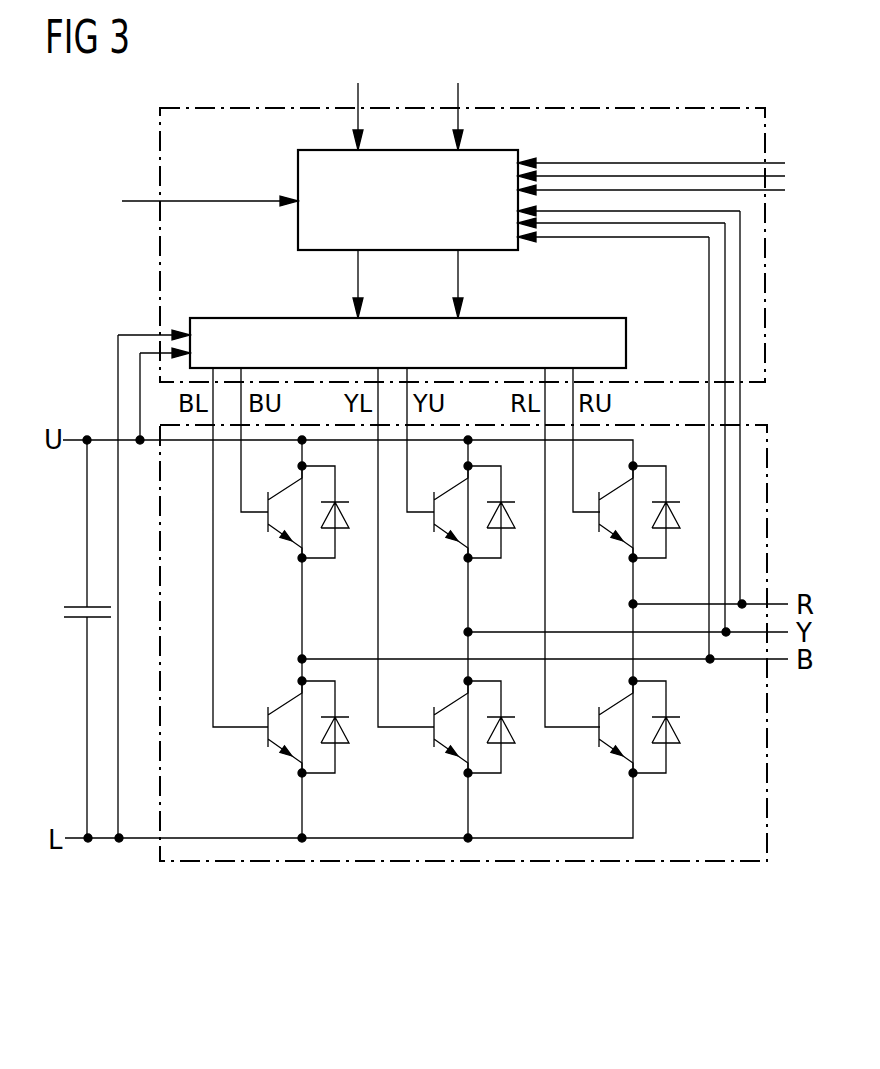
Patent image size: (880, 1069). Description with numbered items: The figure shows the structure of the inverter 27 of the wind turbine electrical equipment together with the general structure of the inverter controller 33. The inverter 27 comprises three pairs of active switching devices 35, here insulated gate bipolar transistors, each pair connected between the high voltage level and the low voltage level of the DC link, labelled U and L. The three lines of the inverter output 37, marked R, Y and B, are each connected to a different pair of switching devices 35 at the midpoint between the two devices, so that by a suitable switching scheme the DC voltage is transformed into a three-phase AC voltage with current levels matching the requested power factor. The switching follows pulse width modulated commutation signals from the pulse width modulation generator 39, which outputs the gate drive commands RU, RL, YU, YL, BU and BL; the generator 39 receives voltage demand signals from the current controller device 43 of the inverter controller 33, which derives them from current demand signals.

The inverter 27 is at (530, 862).
The inverter controller 33 is at (508, 107).
The active switching devices 35 is at (453, 646).
The inverter output 37 is at (448, 643).
The pulse width modulation generator 39 is at (570, 318).
The current controller device 43 is at (298, 175).